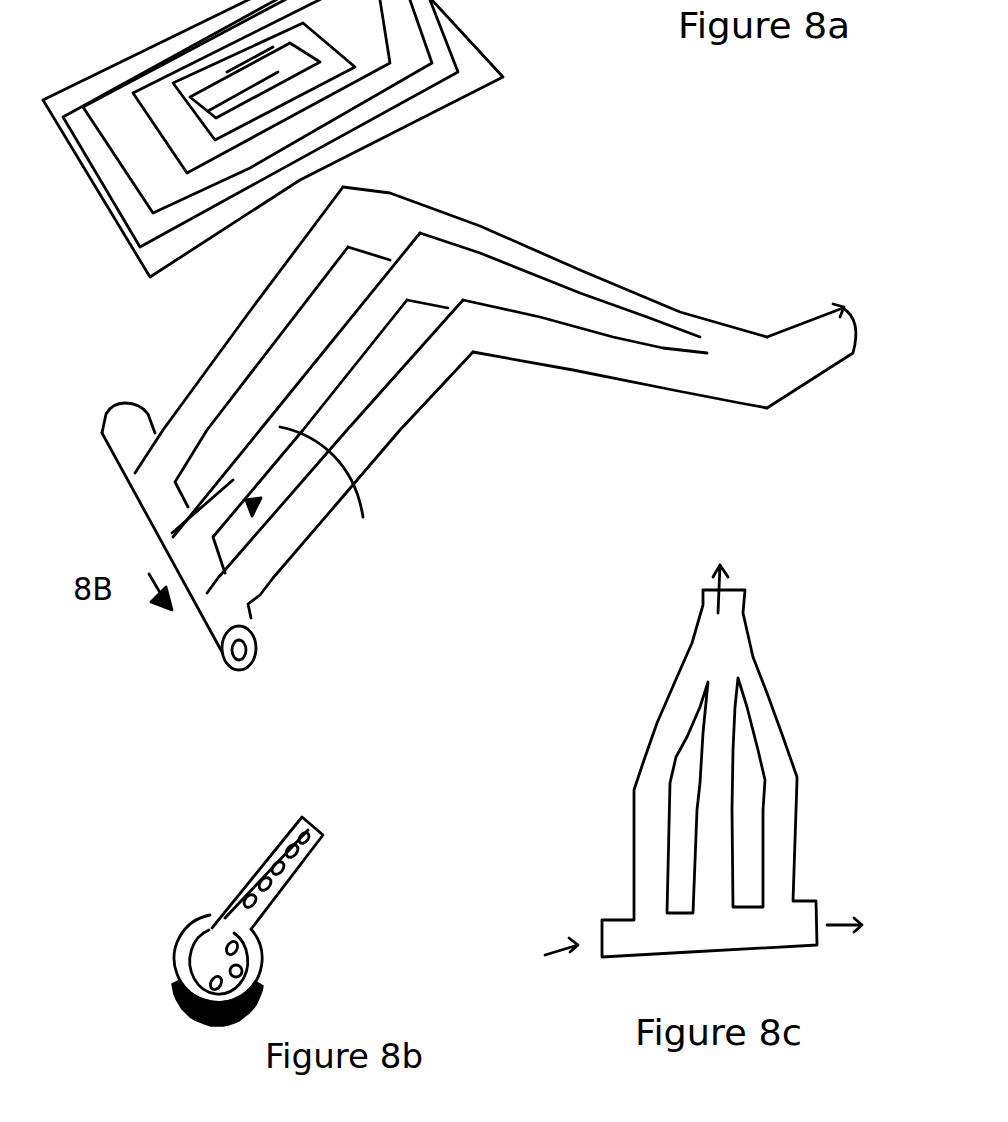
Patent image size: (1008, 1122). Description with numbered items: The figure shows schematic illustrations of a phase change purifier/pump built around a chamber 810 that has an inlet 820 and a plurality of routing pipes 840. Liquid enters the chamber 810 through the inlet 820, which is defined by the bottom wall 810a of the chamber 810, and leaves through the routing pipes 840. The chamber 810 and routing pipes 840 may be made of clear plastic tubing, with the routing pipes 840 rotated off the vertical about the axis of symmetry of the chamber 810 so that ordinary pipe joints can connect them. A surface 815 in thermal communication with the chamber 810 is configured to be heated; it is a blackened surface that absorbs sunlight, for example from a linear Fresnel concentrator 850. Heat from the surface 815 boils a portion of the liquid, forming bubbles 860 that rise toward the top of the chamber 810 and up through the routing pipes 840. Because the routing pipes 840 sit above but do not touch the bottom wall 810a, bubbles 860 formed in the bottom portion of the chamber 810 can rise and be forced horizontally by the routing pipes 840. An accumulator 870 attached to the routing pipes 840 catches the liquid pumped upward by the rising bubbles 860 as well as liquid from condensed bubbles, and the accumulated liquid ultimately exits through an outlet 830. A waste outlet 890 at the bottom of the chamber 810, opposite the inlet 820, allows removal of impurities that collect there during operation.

In FIG. 8A, the chamber 810 is at (216, 612).
In FIG. 8C, the chamber 810 is at (735, 932).
In FIG. 8A, the bottom wall 810a is at (130, 438).
In FIG. 8B, the surface 815 is at (172, 997).
In FIG. 8A, the inlet 820 is at (126, 395).
In FIG. 8C, the inlet 820 is at (550, 933).
In FIG. 8A, the outlet 830 is at (820, 359).
In FIG. 8C, the outlet 830 is at (756, 579).
In FIG. 8A, the routing pipes 840 is at (300, 517).
In FIG. 8B, the routing pipes 840 is at (261, 909).
In FIG. 8A, the linear Fresnel concentrator 850 is at (280, 138).
In FIG. 8B, the bubbles 860 is at (207, 961).
In FIG. 8A, the accumulator 870 is at (733, 338).
In FIG. 8C, the accumulator 870 is at (720, 675).
In FIG. 8A, the waste outlet 890 is at (277, 648).
In FIG. 8C, the waste outlet 890 is at (852, 904).